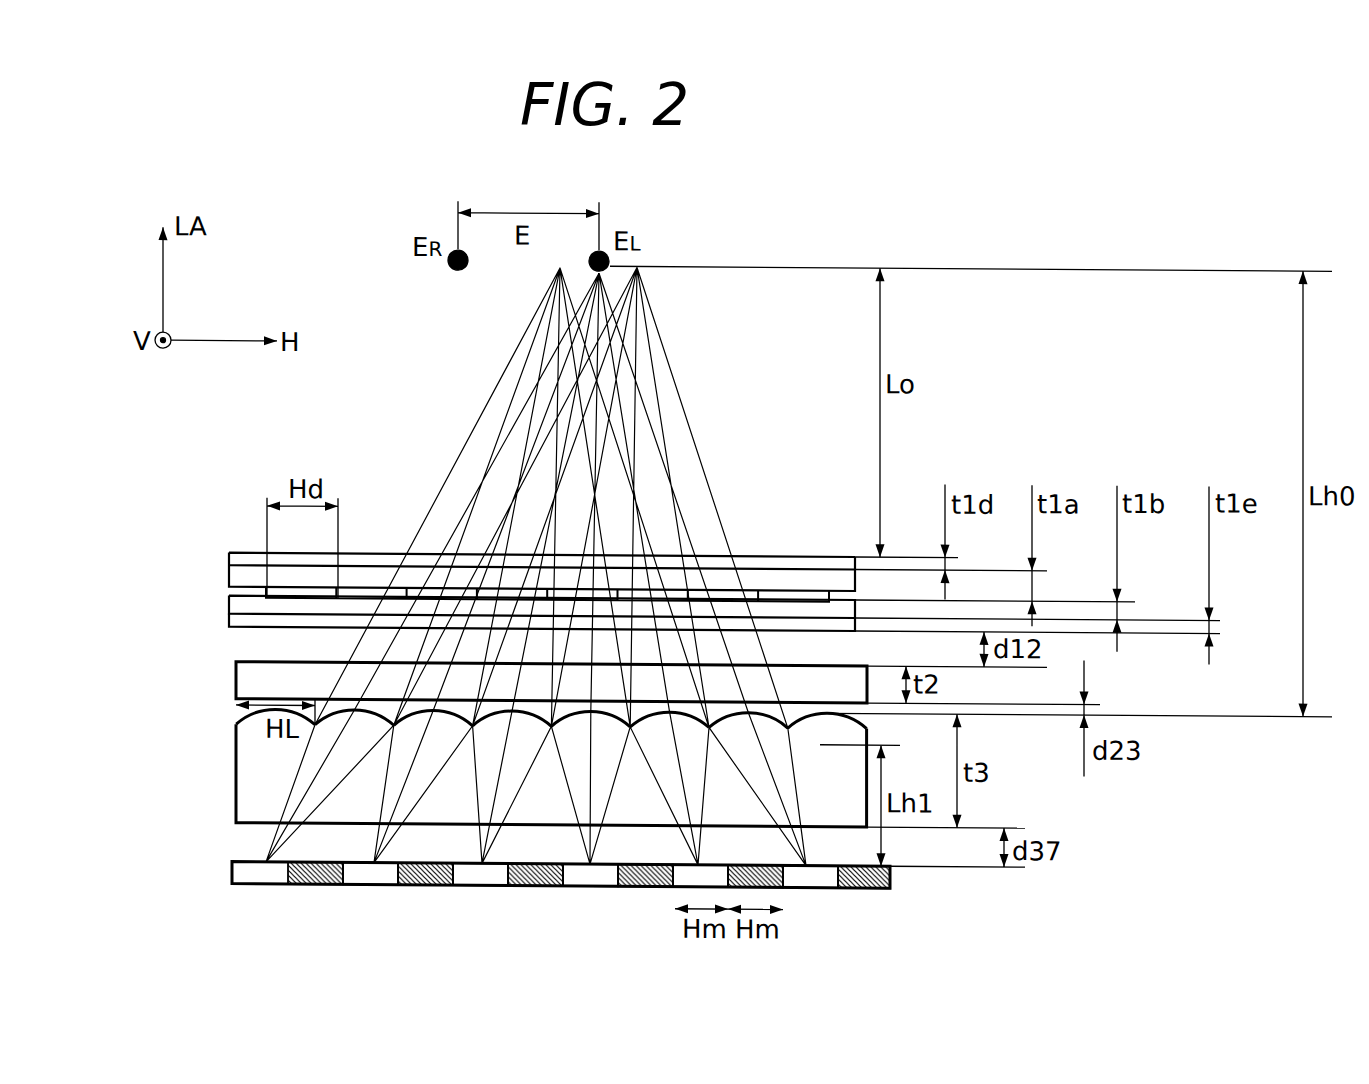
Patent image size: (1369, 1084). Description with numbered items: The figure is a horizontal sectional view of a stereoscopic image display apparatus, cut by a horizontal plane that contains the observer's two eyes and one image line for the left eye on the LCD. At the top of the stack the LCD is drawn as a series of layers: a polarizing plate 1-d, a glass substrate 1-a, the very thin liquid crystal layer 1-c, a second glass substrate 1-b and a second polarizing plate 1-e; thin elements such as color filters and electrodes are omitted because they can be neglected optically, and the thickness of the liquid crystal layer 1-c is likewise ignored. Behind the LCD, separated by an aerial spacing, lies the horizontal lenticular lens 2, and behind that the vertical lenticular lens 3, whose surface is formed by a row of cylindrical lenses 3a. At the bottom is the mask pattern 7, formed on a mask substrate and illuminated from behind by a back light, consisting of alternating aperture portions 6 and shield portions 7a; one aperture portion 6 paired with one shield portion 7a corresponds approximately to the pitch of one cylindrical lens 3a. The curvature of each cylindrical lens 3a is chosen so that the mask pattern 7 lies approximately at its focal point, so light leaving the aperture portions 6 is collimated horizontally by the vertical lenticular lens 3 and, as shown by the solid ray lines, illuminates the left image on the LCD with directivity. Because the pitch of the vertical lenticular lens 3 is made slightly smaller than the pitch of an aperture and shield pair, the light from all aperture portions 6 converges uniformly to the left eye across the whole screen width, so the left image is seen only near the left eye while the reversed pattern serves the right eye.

The polarizing plate 1-d is at (238, 551).
The glass substrate 1-a is at (233, 574).
The liquid crystal layer 1-c is at (273, 589).
The glass substrate 1-b is at (233, 602).
The polarizing plate 1-e is at (232, 621).
The horizontal lenticular lens 2 is at (243, 672).
The vertical lenticular lens 3 is at (583, 776).
The cylindrical lens 3a is at (248, 739).
The mask pattern 7 is at (522, 909).
The shield portion 7a is at (313, 882).
The aperture portion 6 is at (377, 884).